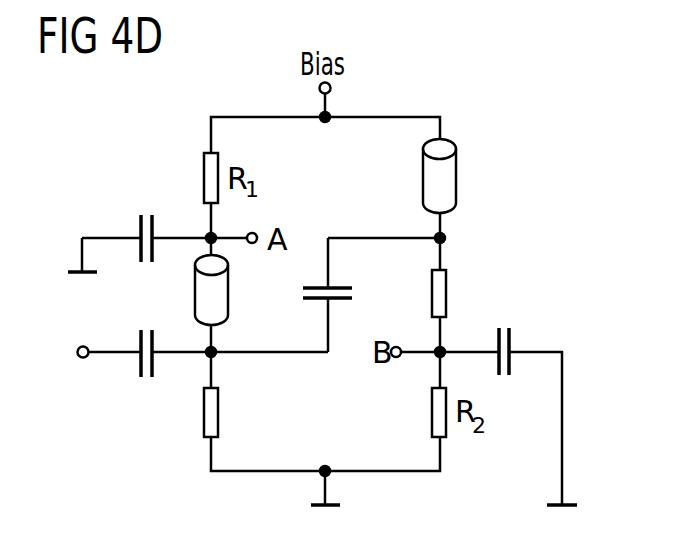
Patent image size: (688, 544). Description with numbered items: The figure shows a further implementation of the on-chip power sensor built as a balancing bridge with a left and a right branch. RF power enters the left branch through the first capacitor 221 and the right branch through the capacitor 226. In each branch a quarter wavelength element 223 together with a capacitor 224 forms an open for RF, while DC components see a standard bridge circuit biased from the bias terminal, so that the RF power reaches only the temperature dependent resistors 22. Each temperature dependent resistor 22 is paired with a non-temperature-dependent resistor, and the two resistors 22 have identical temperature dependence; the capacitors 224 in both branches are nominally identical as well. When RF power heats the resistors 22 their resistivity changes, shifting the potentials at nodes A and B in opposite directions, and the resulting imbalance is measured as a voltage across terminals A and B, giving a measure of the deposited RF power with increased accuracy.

The first capacitor 221 is at (97, 347).
The second capacitor 224 is at (110, 238).
The capacitor 226 is at (308, 288).
The quarter wavelength element 223 is at (195, 290).
The temperature dependent resistor 22 is at (204, 414).